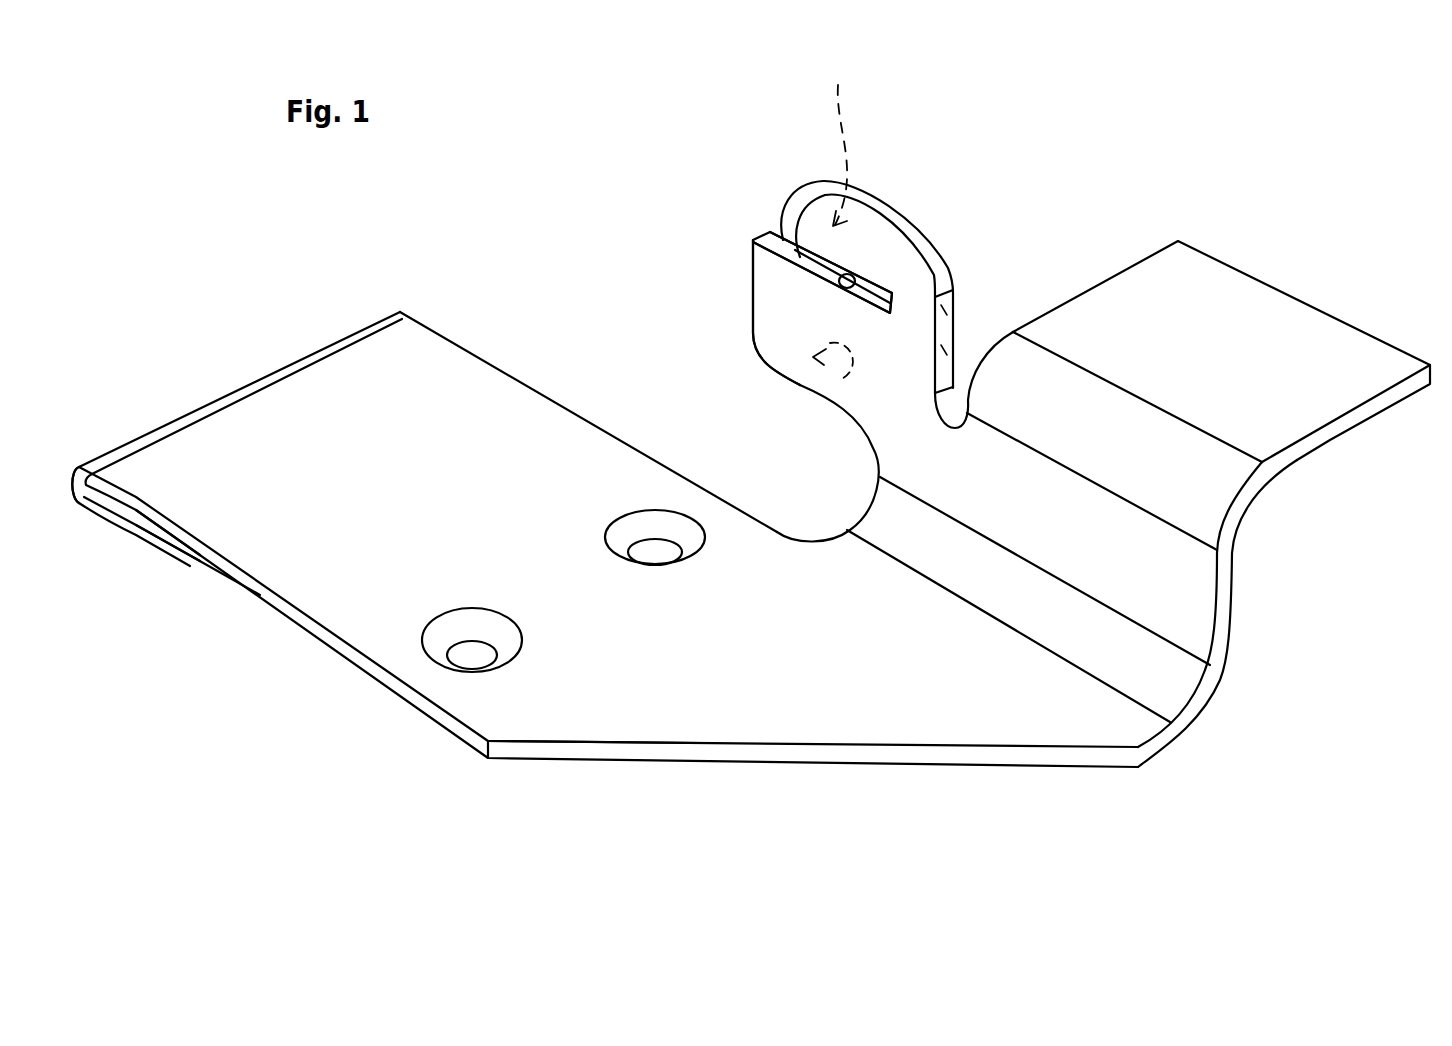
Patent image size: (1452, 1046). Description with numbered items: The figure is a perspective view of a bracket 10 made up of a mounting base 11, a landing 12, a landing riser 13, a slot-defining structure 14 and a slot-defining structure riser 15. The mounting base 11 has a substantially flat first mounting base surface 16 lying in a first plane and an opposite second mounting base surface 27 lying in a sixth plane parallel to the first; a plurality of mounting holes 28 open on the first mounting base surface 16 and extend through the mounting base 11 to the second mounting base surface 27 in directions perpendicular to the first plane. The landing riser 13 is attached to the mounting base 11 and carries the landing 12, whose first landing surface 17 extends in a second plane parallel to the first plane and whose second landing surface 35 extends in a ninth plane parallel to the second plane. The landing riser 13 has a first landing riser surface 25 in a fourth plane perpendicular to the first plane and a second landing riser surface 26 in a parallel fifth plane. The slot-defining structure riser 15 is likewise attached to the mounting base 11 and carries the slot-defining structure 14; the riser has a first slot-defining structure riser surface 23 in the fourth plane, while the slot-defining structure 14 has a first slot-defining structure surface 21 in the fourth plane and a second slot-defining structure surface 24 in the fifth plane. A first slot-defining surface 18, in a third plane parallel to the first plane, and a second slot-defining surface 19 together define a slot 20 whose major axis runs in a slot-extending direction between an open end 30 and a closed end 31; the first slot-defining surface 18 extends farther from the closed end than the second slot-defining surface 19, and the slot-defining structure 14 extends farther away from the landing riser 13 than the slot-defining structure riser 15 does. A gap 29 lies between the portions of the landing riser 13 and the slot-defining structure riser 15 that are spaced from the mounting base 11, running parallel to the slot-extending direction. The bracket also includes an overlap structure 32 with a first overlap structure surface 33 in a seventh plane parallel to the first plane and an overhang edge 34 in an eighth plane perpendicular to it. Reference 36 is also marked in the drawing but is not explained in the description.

The bracket 10 is at (1315, 200).
The mounting base 11 is at (863, 690).
The landing 12 is at (1312, 333).
The landing riser 13 is at (1125, 585).
The slot-defining structure 14 is at (707, 117).
The slot-defining structure riser 15 is at (903, 440).
The first mounting base surface 16 is at (489, 514).
The first landing surface 17 is at (1183, 344).
The first slot-defining surface 18 is at (772, 232).
The second slot-defining surface 19 is at (848, 274).
The slot 20 is at (801, 247).
The first slot-defining structure surface 21 is at (800, 236).
The first slot-defining structure riser surface 23 is at (930, 492).
The second slot-defining structure surface 24 is at (772, 425).
The first landing riser surface 25 is at (1078, 549).
The second landing riser surface 26 is at (1195, 620).
The second mounting base surface 27 is at (600, 690).
The mounting holes 28 is at (487, 635).
The gap 29 is at (969, 373).
The open end 30 is at (756, 229).
The closed end 31 is at (893, 302).
The overlap structure 32 is at (90, 488).
The first overlap structure surface 33 is at (150, 556).
The overhang edge 34 is at (167, 549).
The second landing surface 35 is at (1277, 393).
The slot 36 is at (888, 408).